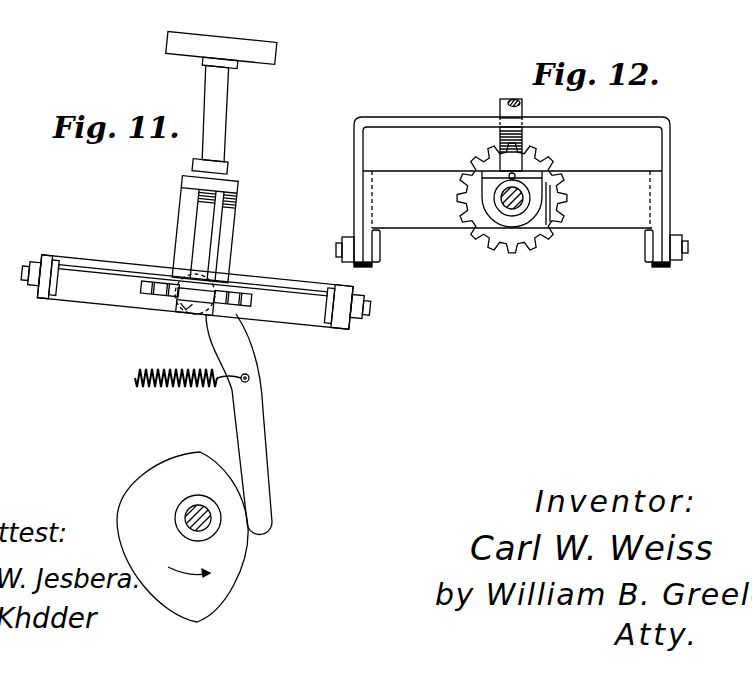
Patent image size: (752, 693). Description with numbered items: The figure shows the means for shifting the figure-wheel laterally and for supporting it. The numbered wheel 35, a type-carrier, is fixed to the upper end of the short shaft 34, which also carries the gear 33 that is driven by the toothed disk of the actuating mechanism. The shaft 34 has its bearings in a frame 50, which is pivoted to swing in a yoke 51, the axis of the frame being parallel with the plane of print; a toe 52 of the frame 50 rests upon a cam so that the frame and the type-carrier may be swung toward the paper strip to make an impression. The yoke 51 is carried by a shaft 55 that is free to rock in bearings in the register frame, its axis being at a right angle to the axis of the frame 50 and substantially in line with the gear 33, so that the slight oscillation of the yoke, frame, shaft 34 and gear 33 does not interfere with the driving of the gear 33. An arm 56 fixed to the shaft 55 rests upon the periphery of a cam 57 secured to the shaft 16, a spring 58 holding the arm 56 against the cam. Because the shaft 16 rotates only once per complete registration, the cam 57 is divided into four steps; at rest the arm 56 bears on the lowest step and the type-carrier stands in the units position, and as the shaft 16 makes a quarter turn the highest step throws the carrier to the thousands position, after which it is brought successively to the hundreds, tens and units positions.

In FIG. 11, the shaft 16 is at (207, 523).
In FIG. 11, the gear 33 is at (158, 287).
In FIG. 12, the gear 33 is at (503, 234).
In FIG. 11, the short shaft 34 is at (217, 120).
In FIG. 12, the short shaft 34 is at (516, 203).
In FIG. 11, the numbered wheel 35 is at (260, 52).
In FIG. 11, the frame 50 is at (255, 287).
In FIG. 12, the frame 50 is at (512, 216).
In FIG. 11, the yoke 51 is at (313, 313).
In FIG. 12, the yoke 51 is at (643, 118).
In FIG. 12, the toe 52 is at (524, 137).
In FIG. 11, the shaft 55 is at (183, 307).
In FIG. 12, the shaft 55 is at (501, 108).
In FIG. 11, the arm 56 is at (250, 425).
In FIG. 11, the cam 57 is at (182, 537).
In FIG. 11, the spring 58 is at (192, 388).